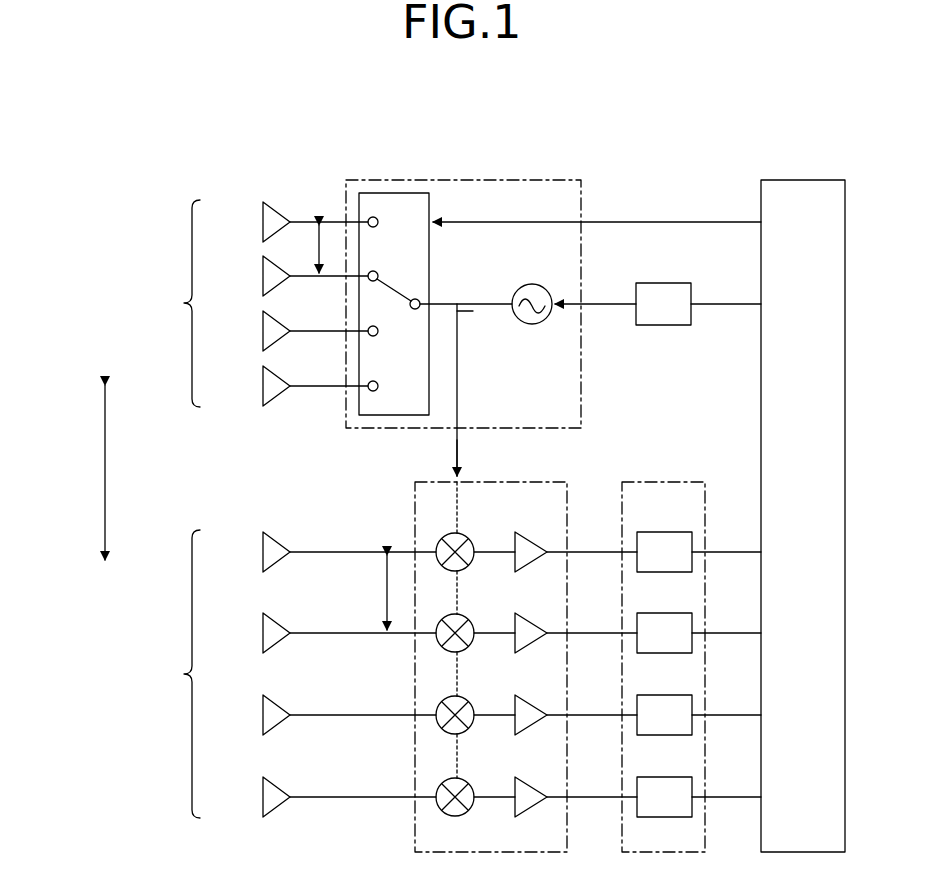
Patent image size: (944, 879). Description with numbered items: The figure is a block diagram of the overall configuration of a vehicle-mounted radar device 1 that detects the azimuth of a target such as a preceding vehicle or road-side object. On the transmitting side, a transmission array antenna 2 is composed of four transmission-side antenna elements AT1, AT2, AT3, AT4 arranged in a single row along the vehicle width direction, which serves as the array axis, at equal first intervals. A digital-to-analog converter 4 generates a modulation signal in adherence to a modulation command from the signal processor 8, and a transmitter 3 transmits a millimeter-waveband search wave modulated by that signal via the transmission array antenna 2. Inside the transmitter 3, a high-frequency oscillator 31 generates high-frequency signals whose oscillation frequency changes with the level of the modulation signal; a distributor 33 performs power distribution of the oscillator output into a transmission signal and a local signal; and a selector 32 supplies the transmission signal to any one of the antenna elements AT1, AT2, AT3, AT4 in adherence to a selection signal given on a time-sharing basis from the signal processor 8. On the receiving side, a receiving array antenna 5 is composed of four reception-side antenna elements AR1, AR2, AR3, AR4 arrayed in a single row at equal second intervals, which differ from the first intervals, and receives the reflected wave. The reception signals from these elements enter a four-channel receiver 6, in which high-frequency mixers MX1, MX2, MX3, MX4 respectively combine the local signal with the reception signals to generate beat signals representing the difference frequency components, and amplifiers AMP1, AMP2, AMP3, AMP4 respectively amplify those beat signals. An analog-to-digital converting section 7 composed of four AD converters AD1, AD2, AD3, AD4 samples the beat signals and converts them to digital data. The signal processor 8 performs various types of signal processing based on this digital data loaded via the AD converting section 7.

The radar device 1 is at (647, 93).
The transmission array antenna 2 is at (224, 302).
The transmitter 3 is at (536, 182).
The digital-to-analog converter 4 is at (675, 283).
The receiving array antenna 5 is at (224, 672).
The receiver 6 is at (536, 487).
The analog-to-digital converting section 7 is at (675, 487).
The signal processor 8 is at (813, 180).
The high-frequency oscillator 31 is at (534, 285).
The selector 32 is at (430, 252).
The distributor 33 is at (473, 311).
The transmission-side antenna element AT1 is at (263, 210).
The transmission-side antenna element AT2 is at (263, 264).
The transmission-side antenna element AT3 is at (263, 319).
The transmission-side antenna element AT4 is at (263, 374).
The reception-side antenna element AR1 is at (264, 540).
The reception-side antenna element AR2 is at (264, 621).
The reception-side antenna element AR3 is at (264, 703).
The reception-side antenna element AR4 is at (264, 785).
The high-frequency mixer MX1 is at (470, 534).
The high-frequency mixer MX2 is at (470, 615).
The high-frequency mixer MX3 is at (470, 697).
The high-frequency mixer MX4 is at (470, 779).
The amplifier AMP1 is at (531, 521).
The amplifier AMP2 is at (531, 602).
The amplifier AMP3 is at (531, 684).
The amplifier AMP4 is at (531, 766).
The AD converter AD1 is at (671, 531).
The AD converter AD2 is at (671, 612).
The AD converter AD3 is at (671, 694).
The AD converter AD4 is at (671, 776).